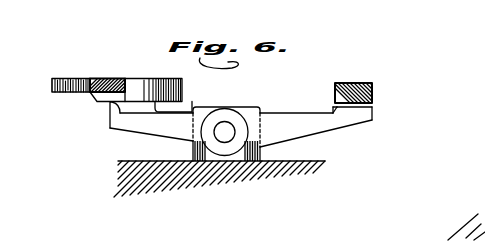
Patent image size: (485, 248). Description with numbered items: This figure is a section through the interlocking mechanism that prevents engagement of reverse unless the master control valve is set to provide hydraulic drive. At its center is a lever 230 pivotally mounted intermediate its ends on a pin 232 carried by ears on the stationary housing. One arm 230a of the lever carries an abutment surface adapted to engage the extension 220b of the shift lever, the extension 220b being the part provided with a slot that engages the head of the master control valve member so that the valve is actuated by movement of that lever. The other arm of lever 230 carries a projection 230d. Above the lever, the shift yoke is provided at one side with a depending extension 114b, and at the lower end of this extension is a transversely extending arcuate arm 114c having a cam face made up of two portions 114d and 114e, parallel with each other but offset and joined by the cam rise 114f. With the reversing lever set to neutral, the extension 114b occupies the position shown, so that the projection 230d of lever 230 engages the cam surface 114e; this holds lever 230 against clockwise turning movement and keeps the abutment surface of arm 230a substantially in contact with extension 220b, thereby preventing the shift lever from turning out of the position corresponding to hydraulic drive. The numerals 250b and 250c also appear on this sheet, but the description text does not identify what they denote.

The depending extension 114b is at (108, 78).
The transversely extending arcuate arm 114c is at (137, 84).
The cam face portion 114d is at (72, 78).
The cam face portion 114e is at (168, 106).
The cam rise 114f is at (90, 95).
The extension 220b is at (365, 83).
The lever 230 is at (280, 144).
The arm 230a is at (327, 123).
The projection 230d is at (110, 105).
The pin 232 is at (223, 134).
The recess in plate 250b is at (356, 108).
The left portion of plate 250c is at (153, 128).